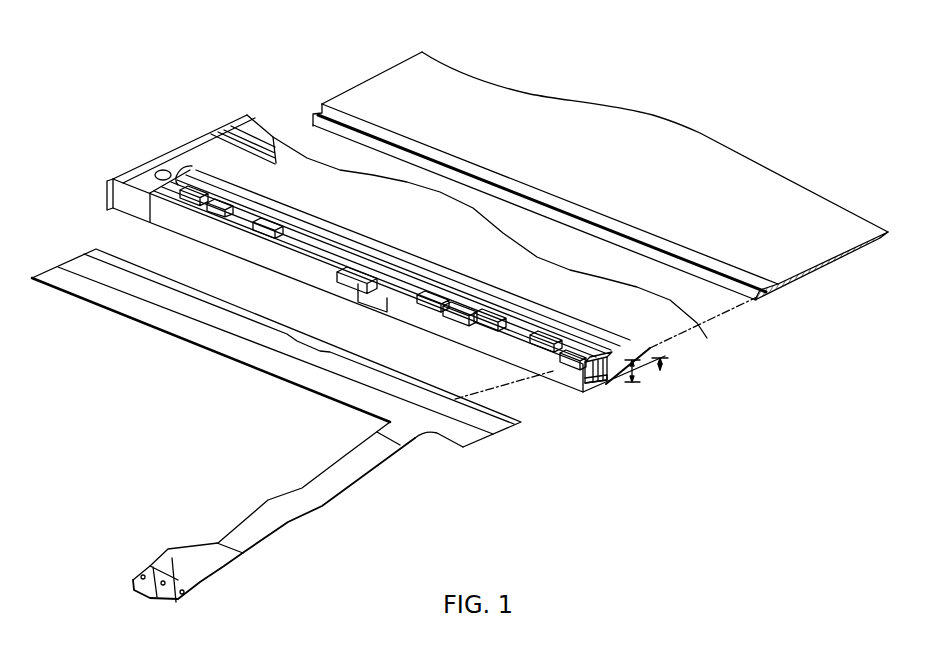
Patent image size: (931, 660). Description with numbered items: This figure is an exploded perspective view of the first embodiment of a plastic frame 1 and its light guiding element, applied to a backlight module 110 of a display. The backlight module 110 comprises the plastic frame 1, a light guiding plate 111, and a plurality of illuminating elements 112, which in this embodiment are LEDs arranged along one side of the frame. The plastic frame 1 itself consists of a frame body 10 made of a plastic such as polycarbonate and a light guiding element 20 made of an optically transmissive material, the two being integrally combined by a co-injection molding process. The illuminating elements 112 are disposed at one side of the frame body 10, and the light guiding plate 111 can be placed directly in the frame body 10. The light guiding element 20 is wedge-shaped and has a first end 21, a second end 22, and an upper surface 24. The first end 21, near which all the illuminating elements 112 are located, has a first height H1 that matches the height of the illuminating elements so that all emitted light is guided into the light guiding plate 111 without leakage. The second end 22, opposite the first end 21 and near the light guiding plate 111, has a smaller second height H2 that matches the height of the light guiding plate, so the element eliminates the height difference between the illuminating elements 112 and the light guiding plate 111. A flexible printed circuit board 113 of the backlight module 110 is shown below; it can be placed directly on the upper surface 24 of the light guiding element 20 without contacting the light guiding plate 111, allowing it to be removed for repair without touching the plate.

The plastic frame 1 is at (114, 152).
The frame body 10 is at (120, 177).
The backlight module 110 is at (163, 111).
The light guiding plate 111 is at (822, 268).
The illuminating elements 112 is at (460, 296).
The flexible printed circuit board 113 is at (282, 364).
The light guiding element 20 is at (628, 353).
The first end 21 is at (613, 378).
The second end 22 is at (645, 357).
The upper surface 24 is at (525, 312).
The first height H1 is at (638, 380).
The second height H2 is at (660, 370).